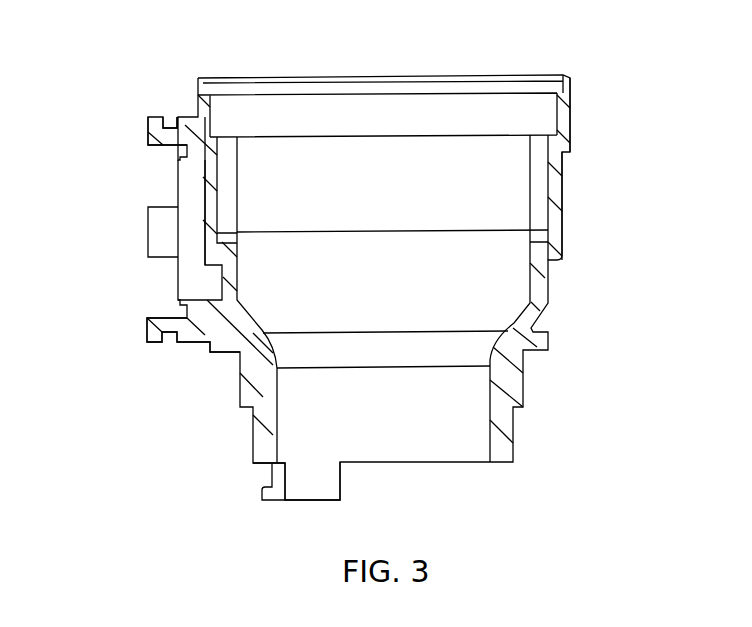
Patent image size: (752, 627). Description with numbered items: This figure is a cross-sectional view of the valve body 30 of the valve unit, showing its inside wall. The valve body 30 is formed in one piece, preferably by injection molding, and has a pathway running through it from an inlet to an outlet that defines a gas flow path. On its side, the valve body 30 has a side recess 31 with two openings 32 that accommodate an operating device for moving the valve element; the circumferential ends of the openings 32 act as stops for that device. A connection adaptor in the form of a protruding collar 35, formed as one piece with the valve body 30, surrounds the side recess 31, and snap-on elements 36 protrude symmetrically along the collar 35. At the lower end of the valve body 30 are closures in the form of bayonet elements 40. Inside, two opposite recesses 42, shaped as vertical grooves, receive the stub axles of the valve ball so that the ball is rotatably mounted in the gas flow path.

The valve body 30 is at (160, 72).
The side recess 31 is at (215, 232).
The openings 32 is at (210, 173).
The protruding collar 35 is at (207, 332).
The snap-on elements 36 is at (157, 128).
The bayonet elements 40 is at (270, 495).
The recesses 42 is at (226, 160).